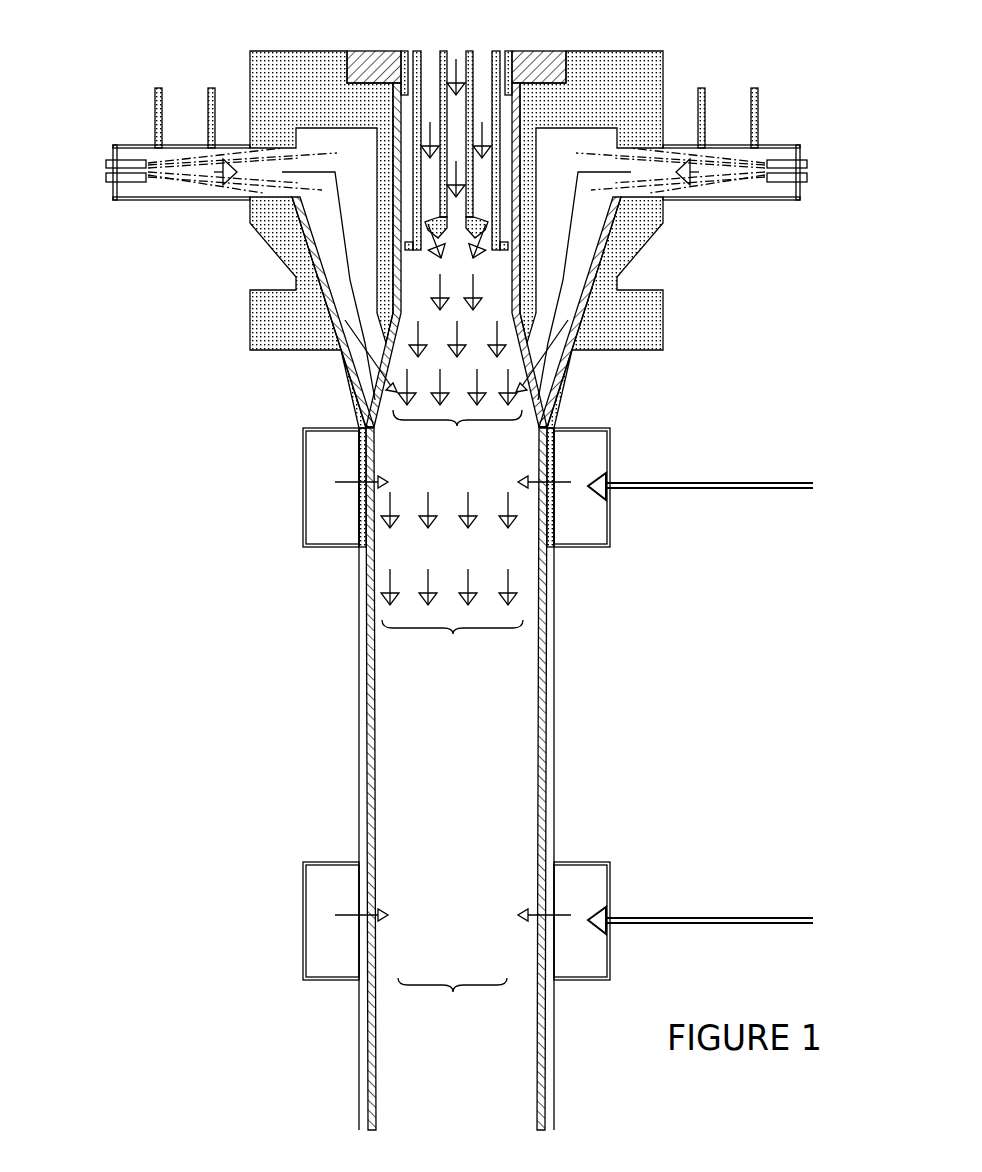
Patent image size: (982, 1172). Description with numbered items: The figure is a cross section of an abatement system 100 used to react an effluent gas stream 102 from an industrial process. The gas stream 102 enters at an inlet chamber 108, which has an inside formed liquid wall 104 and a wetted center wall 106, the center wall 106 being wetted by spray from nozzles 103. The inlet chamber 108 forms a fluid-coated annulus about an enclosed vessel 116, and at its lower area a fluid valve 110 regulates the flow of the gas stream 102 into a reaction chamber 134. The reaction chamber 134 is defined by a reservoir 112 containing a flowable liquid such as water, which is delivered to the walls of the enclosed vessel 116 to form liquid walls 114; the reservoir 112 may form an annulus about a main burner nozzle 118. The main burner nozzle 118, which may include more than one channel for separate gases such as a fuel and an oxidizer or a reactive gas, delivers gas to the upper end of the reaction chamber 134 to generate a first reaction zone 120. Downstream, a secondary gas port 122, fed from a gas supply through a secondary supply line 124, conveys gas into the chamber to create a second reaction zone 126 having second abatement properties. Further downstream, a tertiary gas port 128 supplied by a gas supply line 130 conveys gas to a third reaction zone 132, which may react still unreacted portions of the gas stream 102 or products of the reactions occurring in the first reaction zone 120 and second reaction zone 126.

The abatement system 100 is at (178, 973).
The gas stream 102 is at (187, 170).
The nozzles 103 is at (104, 178).
The liquid wall 104 is at (307, 232).
The center wall 106 is at (538, 164).
The inlet chamber 108 is at (319, 153).
The fluid valve 110 is at (378, 380).
The reservoir 112 is at (355, 51).
The liquid walls 114 is at (375, 723).
The enclosed vessel 116 is at (360, 748).
The main burner nozzle 118 is at (457, 204).
The first reaction zone 120 is at (457, 413).
The secondary gas port 122 is at (456, 487).
The secondary supply line 124 is at (677, 483).
The second reaction zone 126 is at (452, 576).
The tertiary gas port 128 is at (456, 921).
The gas supply line 130 is at (693, 918).
The third reaction zone 132 is at (452, 1000).
The reaction chamber 134 is at (496, 1060).